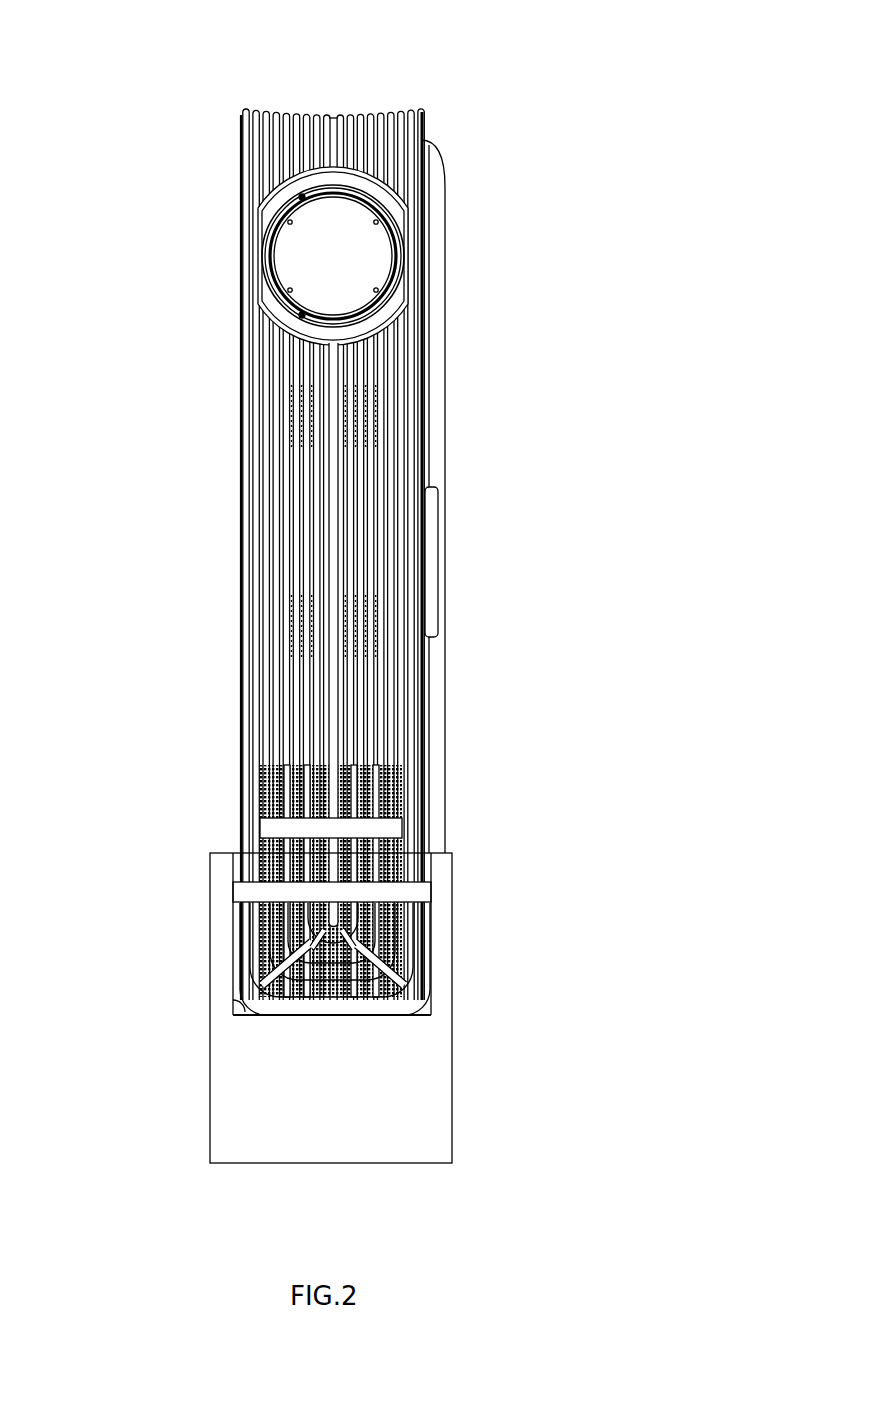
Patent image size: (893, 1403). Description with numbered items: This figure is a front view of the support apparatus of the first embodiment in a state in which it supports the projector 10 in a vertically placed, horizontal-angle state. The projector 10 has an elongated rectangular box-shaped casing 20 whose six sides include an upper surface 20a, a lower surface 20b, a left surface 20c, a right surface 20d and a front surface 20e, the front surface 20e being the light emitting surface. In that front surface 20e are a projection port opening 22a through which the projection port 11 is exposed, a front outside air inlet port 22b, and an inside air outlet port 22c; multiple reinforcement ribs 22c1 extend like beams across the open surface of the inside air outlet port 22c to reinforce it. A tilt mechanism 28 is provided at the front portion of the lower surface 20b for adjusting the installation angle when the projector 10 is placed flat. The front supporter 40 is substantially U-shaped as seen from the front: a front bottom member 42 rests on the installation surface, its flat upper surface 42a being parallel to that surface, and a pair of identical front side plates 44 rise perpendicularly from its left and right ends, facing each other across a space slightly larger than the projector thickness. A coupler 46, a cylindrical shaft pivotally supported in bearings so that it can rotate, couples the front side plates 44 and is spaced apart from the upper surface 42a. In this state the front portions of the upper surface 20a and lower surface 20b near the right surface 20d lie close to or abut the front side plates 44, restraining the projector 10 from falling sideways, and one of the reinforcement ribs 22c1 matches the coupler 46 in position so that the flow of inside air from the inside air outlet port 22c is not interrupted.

The projector 10 is at (433, 97).
The projection port 11 is at (320, 250).
The casing 20 is at (241, 113).
The upper surface 20a is at (241, 433).
The lower surface 20b is at (423, 562).
The left surface 20c is at (318, 113).
The right surface 20d is at (355, 1015).
The front surface 20e is at (333, 523).
The projection port opening 22a is at (272, 290).
The front outside air inlet port 22b is at (308, 615).
The inside air outlet port 22c is at (262, 843).
The reinforcement ribs 22c1 is at (390, 826).
The tilt mechanism 28 is at (445, 450).
The front supporter 40 is at (190, 1108).
The front bottom member 42 is at (453, 1072).
The upper surface of front bottom member 42a is at (233, 1007).
The front side plates 44 is at (210, 933).
The coupler 46 is at (247, 896).